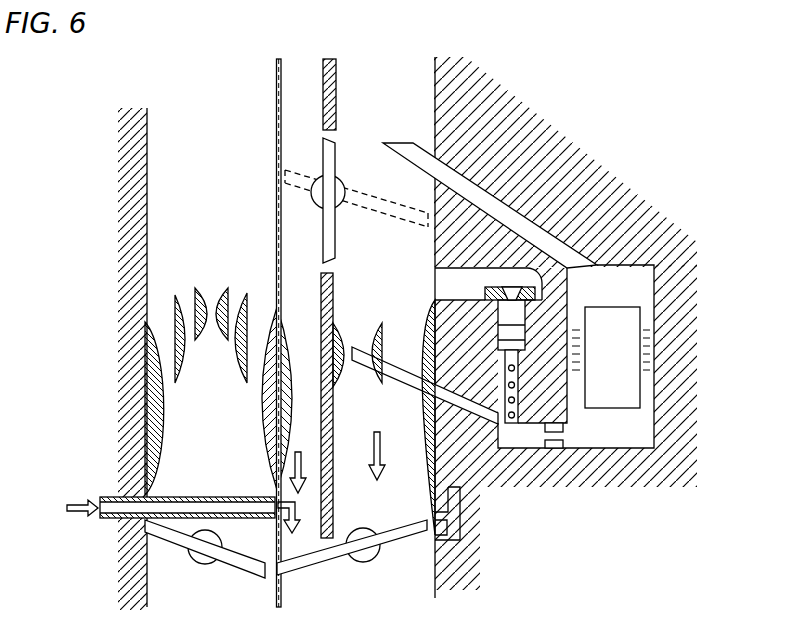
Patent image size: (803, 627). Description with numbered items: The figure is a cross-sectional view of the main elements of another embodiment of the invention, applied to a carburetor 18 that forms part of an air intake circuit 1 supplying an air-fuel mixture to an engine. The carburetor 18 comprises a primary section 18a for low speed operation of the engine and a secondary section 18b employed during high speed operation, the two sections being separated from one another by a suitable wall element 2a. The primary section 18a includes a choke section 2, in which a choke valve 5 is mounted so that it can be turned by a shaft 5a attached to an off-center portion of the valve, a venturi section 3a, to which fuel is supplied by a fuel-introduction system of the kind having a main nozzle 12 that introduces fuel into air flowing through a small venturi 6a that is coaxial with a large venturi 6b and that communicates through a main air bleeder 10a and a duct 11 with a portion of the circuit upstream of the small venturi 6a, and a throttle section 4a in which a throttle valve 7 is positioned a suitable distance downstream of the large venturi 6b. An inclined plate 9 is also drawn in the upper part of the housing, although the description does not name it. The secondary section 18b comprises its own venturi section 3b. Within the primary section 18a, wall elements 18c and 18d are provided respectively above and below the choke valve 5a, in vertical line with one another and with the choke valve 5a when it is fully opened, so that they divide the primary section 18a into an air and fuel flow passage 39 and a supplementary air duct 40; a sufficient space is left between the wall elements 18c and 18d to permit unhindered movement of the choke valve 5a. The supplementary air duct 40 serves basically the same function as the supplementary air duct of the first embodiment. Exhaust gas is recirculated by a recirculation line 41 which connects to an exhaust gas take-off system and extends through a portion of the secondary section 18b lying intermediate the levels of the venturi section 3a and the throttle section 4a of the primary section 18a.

The air intake circuit 1 is at (338, 614).
The choke section 2 is at (140, 178).
The wall element 2a is at (280, 72).
The venturi section 3a is at (397, 443).
The venturi section 3b is at (167, 270).
The throttle section 4a is at (422, 580).
The choke valve 5 is at (322, 148).
The choke valve 5a is at (312, 200).
The small venturi 6a is at (200, 310).
The large venturi 6b is at (155, 406).
The throttle valve 7 is at (173, 533).
The inclined baffle plate 9 is at (400, 143).
The main air bleeder 10a is at (513, 287).
The duct 11 is at (489, 280).
The main nozzle 12 is at (377, 362).
The carburetor 18 is at (618, 232).
The primary section 18a is at (352, 70).
The secondary section 18b is at (215, 115).
The wall element 18c is at (337, 84).
The wall element 18d is at (333, 498).
The air and fuel flow passage 39 is at (395, 259).
The supplementary air duct 40 is at (320, 297).
The recirculation line 41 is at (207, 497).